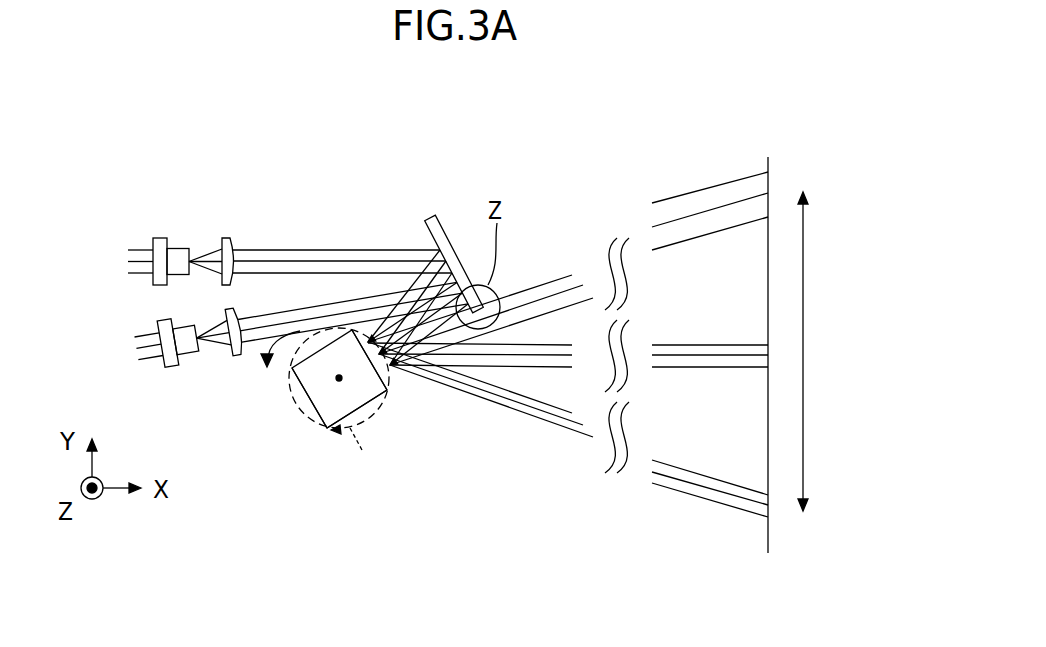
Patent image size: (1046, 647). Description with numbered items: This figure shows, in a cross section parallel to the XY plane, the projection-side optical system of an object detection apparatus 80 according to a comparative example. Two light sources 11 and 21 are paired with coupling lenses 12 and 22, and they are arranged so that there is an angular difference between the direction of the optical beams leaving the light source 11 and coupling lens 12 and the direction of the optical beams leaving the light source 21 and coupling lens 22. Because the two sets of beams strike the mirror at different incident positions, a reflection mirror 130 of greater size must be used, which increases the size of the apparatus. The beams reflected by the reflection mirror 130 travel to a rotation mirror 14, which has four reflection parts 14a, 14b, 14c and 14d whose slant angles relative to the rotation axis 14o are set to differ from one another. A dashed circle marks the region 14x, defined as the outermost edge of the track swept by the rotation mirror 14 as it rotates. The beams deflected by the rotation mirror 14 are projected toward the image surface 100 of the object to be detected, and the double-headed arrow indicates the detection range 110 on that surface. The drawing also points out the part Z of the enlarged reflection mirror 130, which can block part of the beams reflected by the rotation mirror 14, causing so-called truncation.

The object detection apparatus 80 is at (123, 155).
The light source 11 is at (161, 236).
The coupling lens 12 is at (228, 236).
The light source 21 is at (168, 368).
The coupling lens 22 is at (230, 352).
The reflection mirror 130 is at (431, 218).
The rotation mirror 14 is at (333, 432).
The reflection part 14a is at (389, 367).
The reflection part 14b is at (290, 366).
The reflection part 14c is at (311, 410).
The reflection part 14d is at (368, 404).
The rotation axis 14o is at (338, 380).
The region 14x is at (362, 450).
The image surface 100 is at (768, 161).
The detection range 110 is at (805, 346).